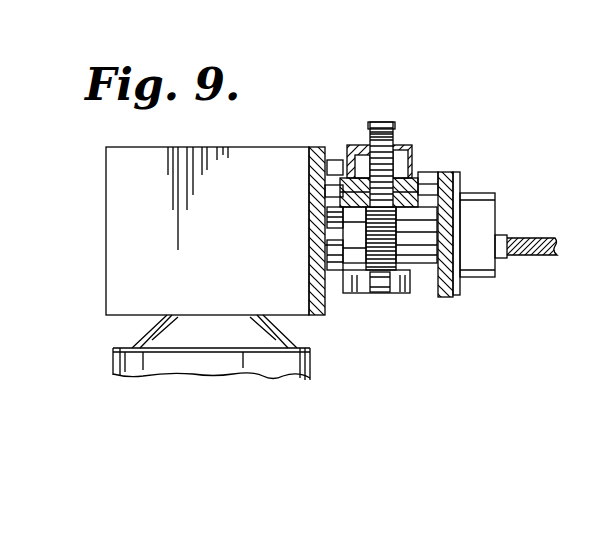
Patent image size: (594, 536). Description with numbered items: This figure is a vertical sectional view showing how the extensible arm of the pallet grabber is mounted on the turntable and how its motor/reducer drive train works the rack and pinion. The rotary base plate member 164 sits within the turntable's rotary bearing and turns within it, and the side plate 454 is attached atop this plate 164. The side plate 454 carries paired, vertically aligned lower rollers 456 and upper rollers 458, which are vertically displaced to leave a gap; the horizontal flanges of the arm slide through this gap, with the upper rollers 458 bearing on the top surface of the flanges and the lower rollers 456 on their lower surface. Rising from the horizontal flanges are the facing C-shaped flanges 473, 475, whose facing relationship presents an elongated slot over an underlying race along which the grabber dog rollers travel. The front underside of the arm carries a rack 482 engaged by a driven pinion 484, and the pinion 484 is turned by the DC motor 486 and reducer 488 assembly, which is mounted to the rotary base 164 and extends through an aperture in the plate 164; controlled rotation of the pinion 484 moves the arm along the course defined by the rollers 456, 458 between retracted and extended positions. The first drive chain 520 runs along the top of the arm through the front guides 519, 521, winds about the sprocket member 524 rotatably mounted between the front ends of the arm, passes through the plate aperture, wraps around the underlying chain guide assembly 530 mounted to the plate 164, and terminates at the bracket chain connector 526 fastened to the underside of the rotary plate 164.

The rotary base plate member 164 is at (527, 253).
The side plate 454 is at (447, 290).
The lower roller 456 is at (310, 214).
The upper roller 458 is at (330, 170).
The C-shaped flange 473 is at (350, 147).
The C-shaped flange 475 is at (410, 152).
The rack 482 is at (335, 188).
The pinion 484 is at (336, 238).
The DC motor 486 is at (211, 347).
The reducer 488 is at (162, 226).
The front chain guide 519 is at (368, 125).
The drive chain 520 is at (383, 122).
The front chain guide 521 is at (398, 131).
The sprocket member 524 is at (405, 160).
The bracket chain connector 526 is at (400, 296).
The chain guide assembly 530 is at (377, 318).